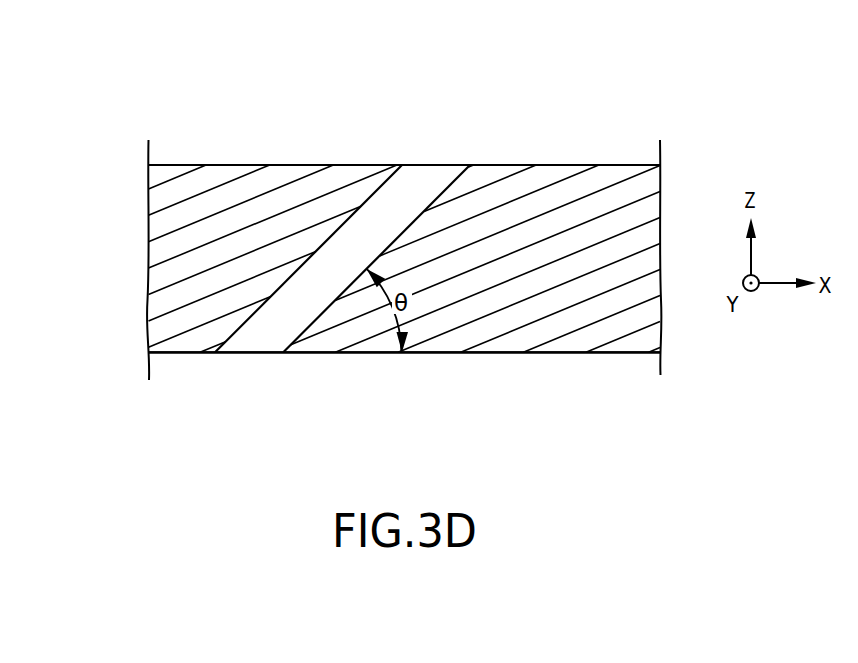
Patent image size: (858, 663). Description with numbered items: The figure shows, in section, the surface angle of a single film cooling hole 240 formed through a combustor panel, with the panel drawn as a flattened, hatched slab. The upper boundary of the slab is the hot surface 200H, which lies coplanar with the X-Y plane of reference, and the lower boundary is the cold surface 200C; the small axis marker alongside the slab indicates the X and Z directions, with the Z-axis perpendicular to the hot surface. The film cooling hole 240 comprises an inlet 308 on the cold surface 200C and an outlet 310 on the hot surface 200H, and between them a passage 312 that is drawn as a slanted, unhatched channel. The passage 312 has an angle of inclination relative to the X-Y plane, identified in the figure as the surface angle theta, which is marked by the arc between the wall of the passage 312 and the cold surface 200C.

The film cooling hole 240 is at (488, 101).
The hot surface 200H is at (576, 165).
The cold surface 200C is at (497, 354).
The outlet 310 is at (421, 165).
The inlet 308 is at (252, 353).
The passage 312 is at (348, 242).